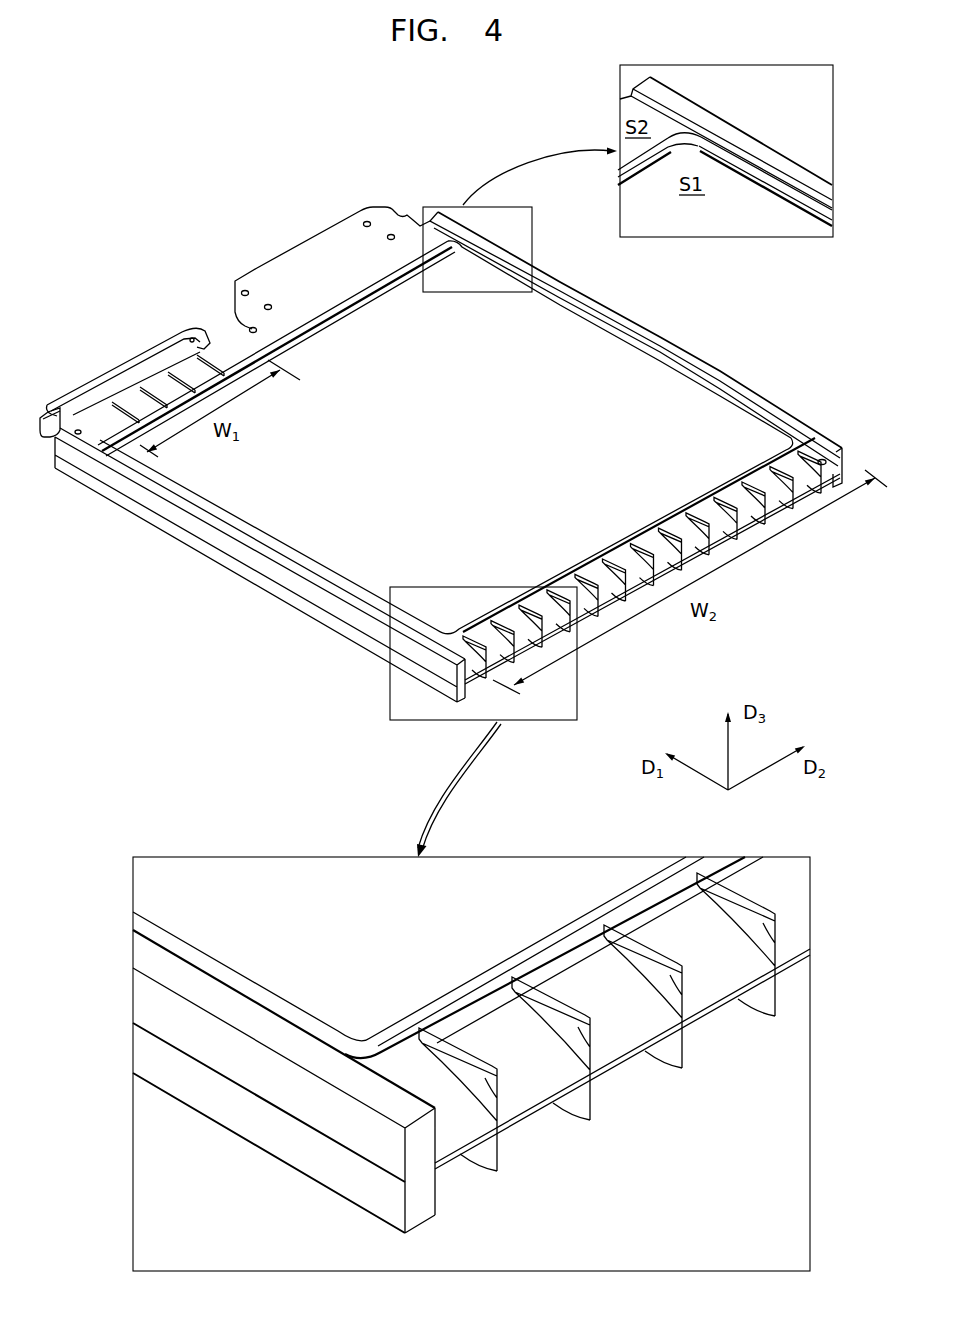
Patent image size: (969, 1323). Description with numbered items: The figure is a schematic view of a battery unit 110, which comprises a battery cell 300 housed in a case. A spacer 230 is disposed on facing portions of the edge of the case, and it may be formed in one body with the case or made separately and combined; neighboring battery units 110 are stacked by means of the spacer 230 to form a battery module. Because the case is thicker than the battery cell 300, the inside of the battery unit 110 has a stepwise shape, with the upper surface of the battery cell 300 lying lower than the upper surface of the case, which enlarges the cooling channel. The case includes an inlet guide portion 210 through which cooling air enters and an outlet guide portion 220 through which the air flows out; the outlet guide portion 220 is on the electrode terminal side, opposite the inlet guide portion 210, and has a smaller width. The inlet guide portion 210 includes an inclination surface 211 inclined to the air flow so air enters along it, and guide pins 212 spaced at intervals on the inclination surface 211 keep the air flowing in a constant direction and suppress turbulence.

The battery unit 110 is at (314, 149).
The inlet guide portion 210 is at (789, 462).
The inclination surface 211 is at (605, 1017).
The guide pins 212 is at (757, 930).
The outlet guide portion 220 is at (221, 347).
The spacer 230 is at (654, 336).
The battery cell 300 is at (663, 406).